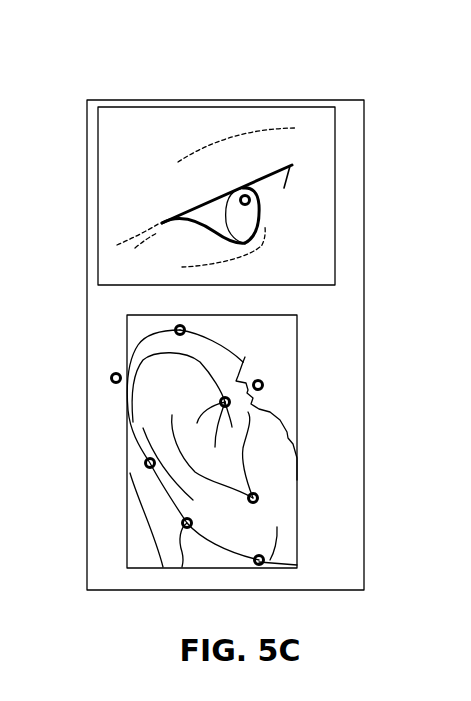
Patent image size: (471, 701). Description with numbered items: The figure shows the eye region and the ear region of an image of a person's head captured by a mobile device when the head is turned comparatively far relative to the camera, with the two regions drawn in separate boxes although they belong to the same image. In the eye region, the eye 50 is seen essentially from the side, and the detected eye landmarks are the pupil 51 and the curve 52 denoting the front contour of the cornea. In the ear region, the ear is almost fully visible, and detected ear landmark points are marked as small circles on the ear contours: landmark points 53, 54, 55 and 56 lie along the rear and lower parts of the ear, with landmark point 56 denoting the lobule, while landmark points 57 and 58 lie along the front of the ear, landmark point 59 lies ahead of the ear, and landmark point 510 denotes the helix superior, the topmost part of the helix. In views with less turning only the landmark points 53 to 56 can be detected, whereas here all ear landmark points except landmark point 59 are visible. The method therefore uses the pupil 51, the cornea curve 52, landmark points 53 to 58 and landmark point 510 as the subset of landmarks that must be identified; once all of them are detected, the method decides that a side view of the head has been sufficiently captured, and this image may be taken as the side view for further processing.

The eye 50 is at (203, 217).
The pupil 51 is at (245, 190).
The curve denoting the cornea 52 is at (259, 190).
The landmark point 53 is at (258, 385).
The landmark point 54 is at (225, 402).
The landmark point 55 is at (253, 498).
The landmark point denoting the lobule 56 is at (259, 560).
The landmark point 57 is at (187, 523).
The landmark point 58 is at (150, 463).
The landmark point 59 is at (116, 378).
The landmark point denoting the helix superior 510 is at (180, 330).